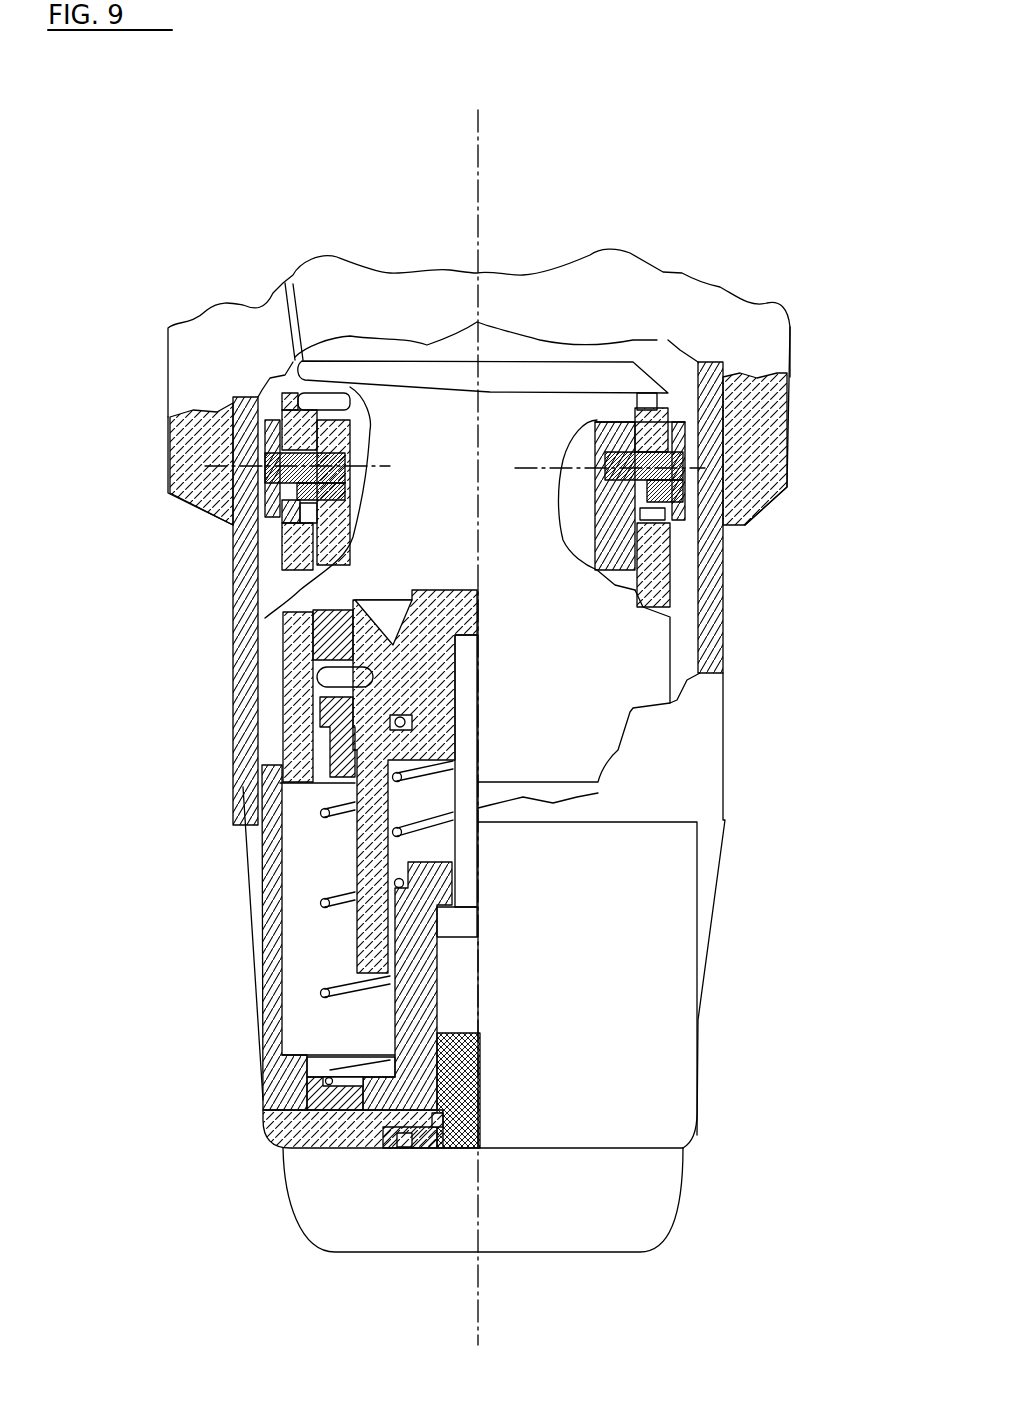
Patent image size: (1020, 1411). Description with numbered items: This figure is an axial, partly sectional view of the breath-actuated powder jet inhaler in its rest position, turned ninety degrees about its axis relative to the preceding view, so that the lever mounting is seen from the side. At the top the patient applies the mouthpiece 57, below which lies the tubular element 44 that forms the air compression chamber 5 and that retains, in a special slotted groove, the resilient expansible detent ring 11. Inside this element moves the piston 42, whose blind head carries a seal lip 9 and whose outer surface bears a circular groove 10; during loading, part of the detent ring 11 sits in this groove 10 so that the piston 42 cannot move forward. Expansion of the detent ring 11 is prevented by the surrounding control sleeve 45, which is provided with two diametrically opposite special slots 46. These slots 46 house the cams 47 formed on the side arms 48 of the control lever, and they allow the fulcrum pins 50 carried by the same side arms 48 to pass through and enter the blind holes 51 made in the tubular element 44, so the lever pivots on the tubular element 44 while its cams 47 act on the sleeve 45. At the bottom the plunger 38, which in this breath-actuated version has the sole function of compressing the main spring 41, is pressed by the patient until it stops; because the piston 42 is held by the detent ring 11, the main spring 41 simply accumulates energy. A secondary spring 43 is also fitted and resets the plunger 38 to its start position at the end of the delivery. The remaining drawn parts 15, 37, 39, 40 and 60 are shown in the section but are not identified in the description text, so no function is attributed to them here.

The compression chamber 5 is at (390, 585).
The seal lip 9 is at (370, 684).
The circular groove 10 is at (235, 767).
The resilient expansible detent ring 11 is at (370, 628).
The sealing disc 15 is at (316, 370).
The housing part 37 is at (248, 802).
The plunger 38 is at (277, 1098).
The ring 39 is at (347, 1100).
The plug 40 is at (460, 1118).
The main spring 41 is at (330, 903).
The piston 42 is at (682, 420).
The secondary spring 43 is at (370, 955).
The tubular element 44 is at (332, 518).
The control sleeve 45 is at (302, 625).
The special slots 46 is at (643, 512).
The cams 47 is at (662, 463).
The side arms 48 is at (675, 535).
The fulcrum pins 50 is at (330, 466).
The blind holes 51 is at (653, 437).
The mouthpiece 57 is at (285, 308).
The stop 60 is at (457, 920).